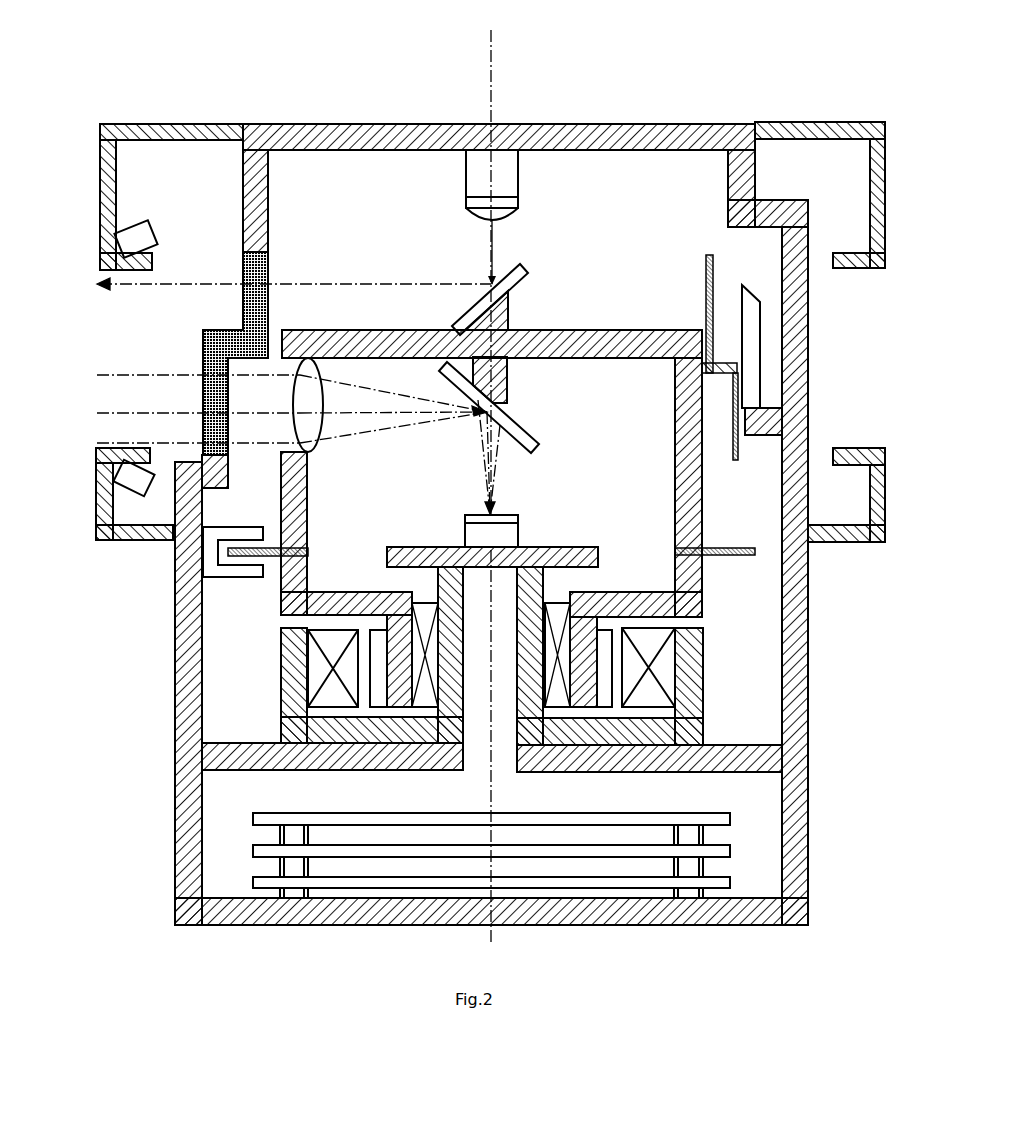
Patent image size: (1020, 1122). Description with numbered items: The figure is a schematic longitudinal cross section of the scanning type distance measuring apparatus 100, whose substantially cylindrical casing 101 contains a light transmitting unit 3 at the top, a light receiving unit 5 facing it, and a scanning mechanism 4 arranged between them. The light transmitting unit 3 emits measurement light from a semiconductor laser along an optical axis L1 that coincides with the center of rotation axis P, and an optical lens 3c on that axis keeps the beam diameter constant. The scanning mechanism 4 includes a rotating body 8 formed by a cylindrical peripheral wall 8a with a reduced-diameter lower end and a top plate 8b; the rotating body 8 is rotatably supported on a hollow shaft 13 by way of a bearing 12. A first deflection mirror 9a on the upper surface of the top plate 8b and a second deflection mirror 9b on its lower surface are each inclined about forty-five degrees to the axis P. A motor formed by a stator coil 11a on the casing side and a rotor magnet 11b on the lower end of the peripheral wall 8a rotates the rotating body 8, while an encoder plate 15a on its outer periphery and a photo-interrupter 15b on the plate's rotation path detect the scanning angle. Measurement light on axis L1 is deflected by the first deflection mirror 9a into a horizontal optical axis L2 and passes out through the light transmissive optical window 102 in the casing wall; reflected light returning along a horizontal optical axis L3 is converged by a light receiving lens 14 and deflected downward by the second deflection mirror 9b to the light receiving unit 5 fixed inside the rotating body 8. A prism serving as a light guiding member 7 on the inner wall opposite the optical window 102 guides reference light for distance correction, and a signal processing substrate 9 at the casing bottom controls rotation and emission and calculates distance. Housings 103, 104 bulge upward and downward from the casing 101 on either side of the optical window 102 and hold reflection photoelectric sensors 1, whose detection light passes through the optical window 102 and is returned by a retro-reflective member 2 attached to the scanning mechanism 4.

The scanning type distance measuring apparatus 100 is at (642, 98).
The casing 101 is at (812, 602).
The optical window 102 is at (205, 340).
The housing 103 is at (150, 124).
The housing 104 is at (110, 540).
The reflection photoelectric sensor 1 is at (155, 234).
The retro-reflective member 2 is at (713, 270).
The light transmitting unit 3 is at (528, 190).
The optical lens 3c is at (518, 207).
The scanning mechanism 4 is at (628, 325).
The light receiving unit 5 is at (526, 532).
The light guiding member 7 is at (760, 325).
The rotating body 8 is at (705, 550).
The peripheral wall 8a is at (432, 615).
The top plate 8b is at (541, 332).
The first deflection mirror 9a is at (520, 270).
The second deflection mirror 9b is at (528, 432).
The signal processing substrate 9 is at (232, 848).
The coil 11a is at (663, 667).
The magnet 11b is at (603, 700).
The bearing 12 is at (553, 700).
The hollow shaft 13 is at (568, 594).
The light receiving lens 14 is at (313, 432).
The encoder plate 15a is at (275, 560).
The photo-interrupter 15b is at (205, 565).
The center of rotation axis P is at (489, 478).
The optical axis L1 is at (482, 258).
The optical axis L2 is at (355, 280).
The optical axis L3 is at (402, 418).